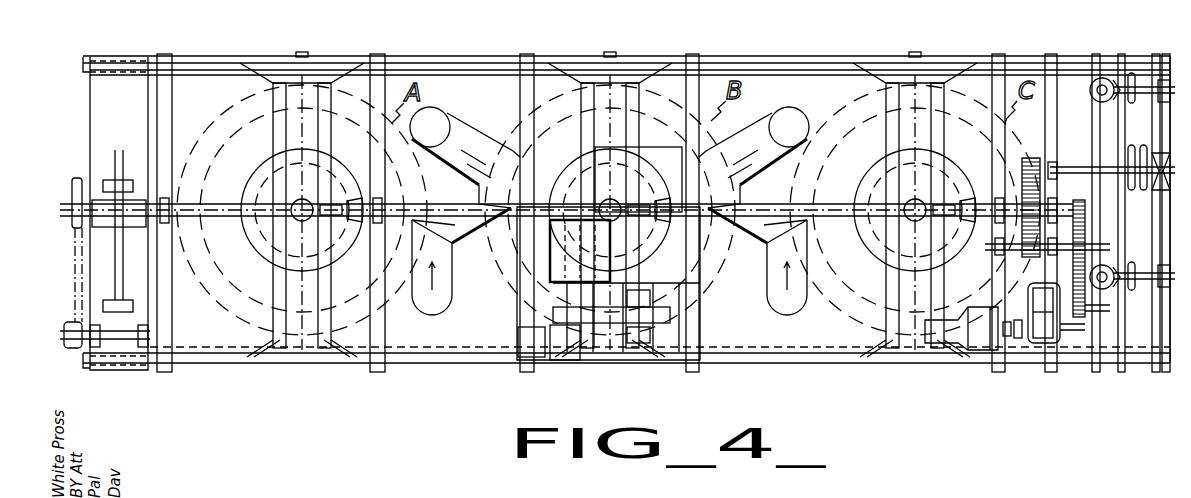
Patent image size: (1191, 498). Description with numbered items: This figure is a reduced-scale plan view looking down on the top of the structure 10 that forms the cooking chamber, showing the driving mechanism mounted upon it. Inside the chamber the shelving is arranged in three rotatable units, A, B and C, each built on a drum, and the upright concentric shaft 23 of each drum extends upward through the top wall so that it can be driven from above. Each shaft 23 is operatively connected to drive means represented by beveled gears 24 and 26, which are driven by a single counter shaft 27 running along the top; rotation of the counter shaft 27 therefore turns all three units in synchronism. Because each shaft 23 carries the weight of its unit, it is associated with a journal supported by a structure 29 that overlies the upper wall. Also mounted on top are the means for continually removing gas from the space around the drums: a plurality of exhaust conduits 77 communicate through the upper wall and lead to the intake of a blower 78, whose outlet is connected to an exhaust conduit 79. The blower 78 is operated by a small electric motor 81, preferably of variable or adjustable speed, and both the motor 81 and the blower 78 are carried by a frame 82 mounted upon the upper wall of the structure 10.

The structure 10 is at (779, 53).
The concentric shaft 23 is at (302, 203).
The beveled gear 24 is at (253, 174).
The beveled gear 26 is at (353, 222).
The counter shaft 27 is at (820, 207).
The structure 29 is at (268, 85).
The exhaust conduit 77 is at (430, 119).
The blower 78 is at (690, 270).
The exhaust conduit 79 is at (545, 262).
The electric motor 81 is at (578, 361).
The frame 82 is at (693, 313).